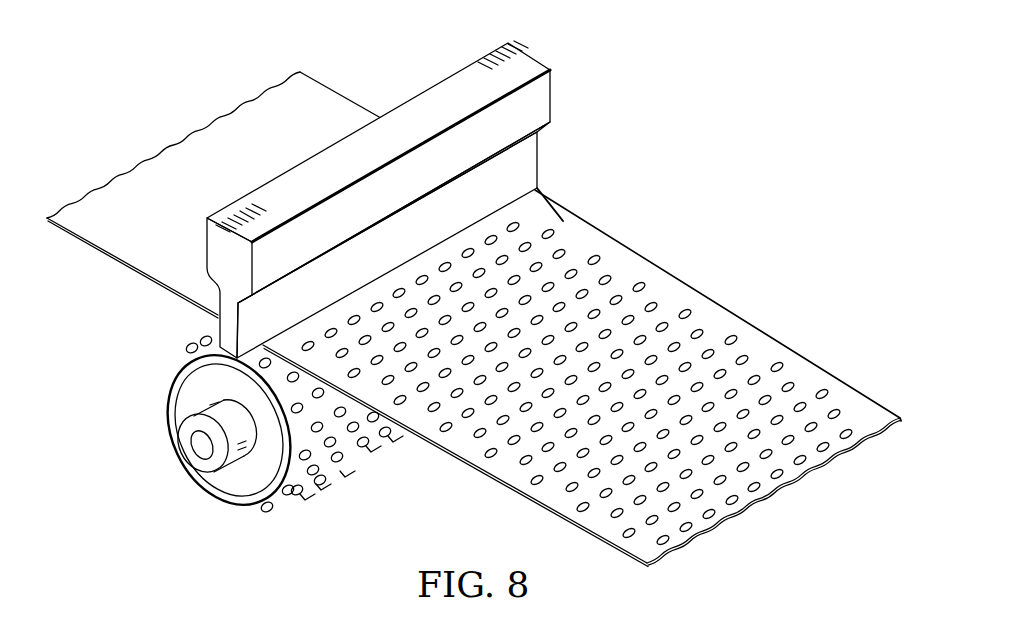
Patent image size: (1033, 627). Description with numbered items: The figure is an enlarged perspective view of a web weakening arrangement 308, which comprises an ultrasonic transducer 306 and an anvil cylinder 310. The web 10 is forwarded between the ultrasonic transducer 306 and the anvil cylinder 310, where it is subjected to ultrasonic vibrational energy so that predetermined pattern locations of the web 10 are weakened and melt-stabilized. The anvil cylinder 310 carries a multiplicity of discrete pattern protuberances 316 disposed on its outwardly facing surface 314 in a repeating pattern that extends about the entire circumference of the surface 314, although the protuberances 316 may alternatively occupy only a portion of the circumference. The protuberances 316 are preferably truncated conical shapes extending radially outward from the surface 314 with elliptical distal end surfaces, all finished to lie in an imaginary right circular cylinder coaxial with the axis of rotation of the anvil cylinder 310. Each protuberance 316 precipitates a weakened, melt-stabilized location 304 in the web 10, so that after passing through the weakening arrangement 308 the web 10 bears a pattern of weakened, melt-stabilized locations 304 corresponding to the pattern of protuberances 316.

The web 10 is at (282, 90).
The weakened, melt-stabilized location 304 is at (596, 257).
The ultrasonic transducer 306 is at (413, 107).
The weakening arrangement 308 is at (208, 496).
The anvil cylinder 310 is at (185, 397).
The outwardly facing surface 314 is at (217, 338).
The protuberances 316 is at (190, 346).